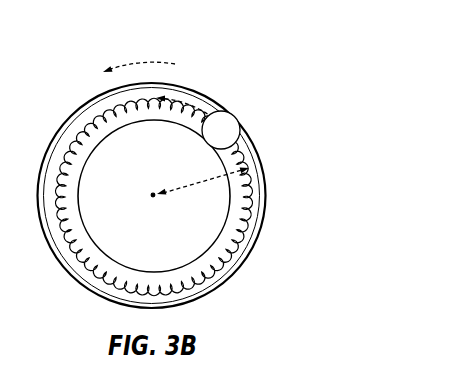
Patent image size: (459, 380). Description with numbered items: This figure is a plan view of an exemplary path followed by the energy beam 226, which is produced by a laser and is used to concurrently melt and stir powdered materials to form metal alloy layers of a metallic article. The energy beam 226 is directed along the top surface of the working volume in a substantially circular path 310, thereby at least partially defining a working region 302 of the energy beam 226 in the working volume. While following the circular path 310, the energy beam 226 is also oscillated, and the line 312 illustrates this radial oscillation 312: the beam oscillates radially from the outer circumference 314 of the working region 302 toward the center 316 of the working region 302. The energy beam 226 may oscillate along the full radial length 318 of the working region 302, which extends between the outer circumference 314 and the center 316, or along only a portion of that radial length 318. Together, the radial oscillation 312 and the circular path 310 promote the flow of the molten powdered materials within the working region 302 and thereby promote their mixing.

The working region 302 is at (272, 186).
The outer circumference 314 is at (259, 166).
The radial oscillation 312 is at (96, 117).
The energy beam 226 is at (224, 131).
The circular path 310 is at (137, 64).
The radial length 318 is at (195, 181).
The center 316 is at (153, 198).